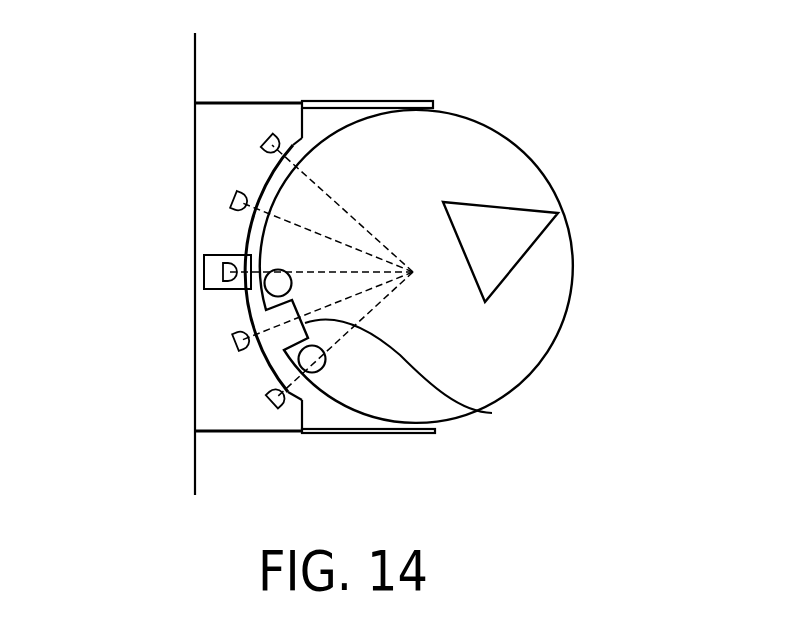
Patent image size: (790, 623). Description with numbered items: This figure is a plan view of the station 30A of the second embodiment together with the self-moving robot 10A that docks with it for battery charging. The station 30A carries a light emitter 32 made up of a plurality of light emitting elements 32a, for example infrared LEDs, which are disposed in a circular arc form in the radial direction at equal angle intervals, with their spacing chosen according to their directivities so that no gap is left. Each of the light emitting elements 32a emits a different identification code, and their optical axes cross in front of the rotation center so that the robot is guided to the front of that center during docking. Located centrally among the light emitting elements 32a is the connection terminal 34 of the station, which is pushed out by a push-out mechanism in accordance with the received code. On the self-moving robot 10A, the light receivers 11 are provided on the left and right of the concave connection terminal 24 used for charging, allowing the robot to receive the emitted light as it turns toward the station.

The station 30A is at (234, 104).
The self-moving robot 10A is at (487, 181).
The light receivers 11 is at (282, 271).
The connection terminal 24 is at (492, 413).
The light emitter 32 is at (120, 107).
The light emitting elements 32a is at (263, 144).
The connection terminal 34 is at (204, 284).